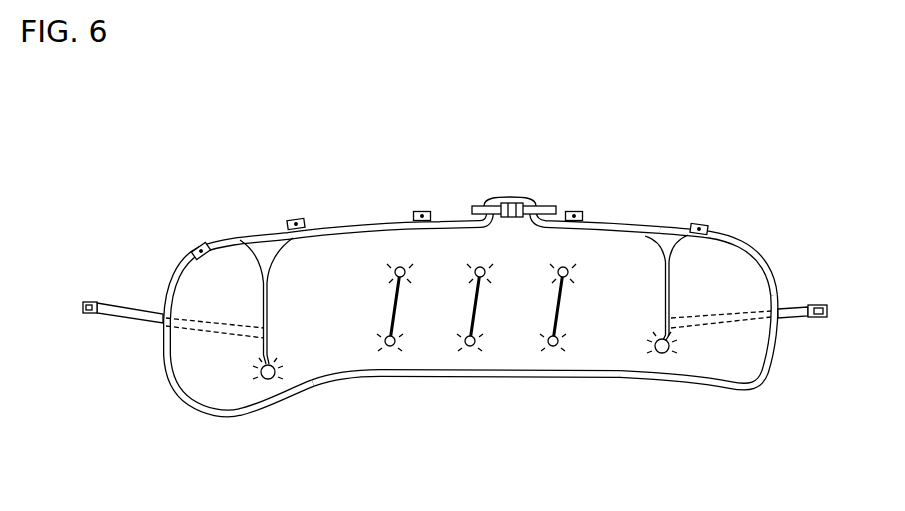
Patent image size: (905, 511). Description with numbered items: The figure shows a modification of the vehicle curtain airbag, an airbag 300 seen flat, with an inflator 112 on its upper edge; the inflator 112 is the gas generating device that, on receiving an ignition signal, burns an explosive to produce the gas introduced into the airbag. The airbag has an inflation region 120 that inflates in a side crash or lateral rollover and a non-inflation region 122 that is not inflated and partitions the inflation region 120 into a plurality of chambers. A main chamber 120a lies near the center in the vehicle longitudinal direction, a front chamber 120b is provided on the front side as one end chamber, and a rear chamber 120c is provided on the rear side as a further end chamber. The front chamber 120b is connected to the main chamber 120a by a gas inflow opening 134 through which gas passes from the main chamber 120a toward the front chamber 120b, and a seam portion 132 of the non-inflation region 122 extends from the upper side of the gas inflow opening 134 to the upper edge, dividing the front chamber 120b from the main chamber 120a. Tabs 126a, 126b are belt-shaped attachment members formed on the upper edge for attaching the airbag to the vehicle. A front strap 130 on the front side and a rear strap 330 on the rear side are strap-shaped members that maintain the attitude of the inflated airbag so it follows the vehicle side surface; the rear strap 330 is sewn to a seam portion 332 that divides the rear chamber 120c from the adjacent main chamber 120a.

The airbag 300 is at (242, 210).
The inflator 112 is at (543, 205).
The inflation region 120 is at (624, 250).
The main chamber 120a is at (362, 355).
The front chamber 120b is at (200, 382).
The rear chamber 120c is at (735, 268).
The non-inflation region 122 is at (735, 242).
The tab 126a is at (296, 220).
The tab 126b is at (196, 245).
The front strap 130 is at (135, 300).
The rear strap 330 is at (800, 307).
The seam portion 132 is at (268, 287).
The gas inflow opening 134 is at (270, 388).
The seam portion 332 is at (663, 295).